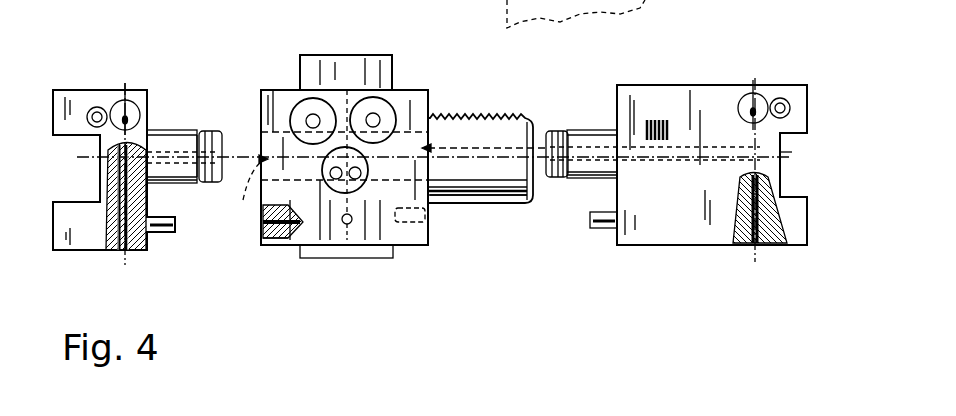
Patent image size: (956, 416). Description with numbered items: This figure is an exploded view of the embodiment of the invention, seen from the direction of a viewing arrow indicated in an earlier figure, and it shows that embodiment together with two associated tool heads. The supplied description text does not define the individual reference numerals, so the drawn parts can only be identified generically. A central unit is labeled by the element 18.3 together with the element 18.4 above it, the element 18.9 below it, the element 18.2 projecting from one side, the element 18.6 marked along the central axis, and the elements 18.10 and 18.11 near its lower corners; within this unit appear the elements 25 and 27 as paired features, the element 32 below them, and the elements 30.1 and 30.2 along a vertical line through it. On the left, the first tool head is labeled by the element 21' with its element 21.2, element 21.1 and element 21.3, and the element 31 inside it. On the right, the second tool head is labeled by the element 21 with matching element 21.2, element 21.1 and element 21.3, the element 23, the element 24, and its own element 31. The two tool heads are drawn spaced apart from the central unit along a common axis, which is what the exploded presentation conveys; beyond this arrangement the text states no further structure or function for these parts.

The second clamping block 21' is at (112, 142).
The clamping block 21 is at (712, 135).
The clamping bolt head 21.1 is at (200, 132).
The clamping bolt shank 21.2 is at (172, 128).
The guide pin 21.3 is at (171, 233).
The knurled marking 23 is at (655, 119).
The clamping recess 24 is at (792, 152).
The locating bores 25 is at (292, 110).
The locating pins 27 is at (368, 116).
The wedge pin 31 is at (126, 251).
The central bore 32 is at (362, 196).
The upper channel 30.1 is at (346, 88).
The lower channel 30.2 is at (347, 225).
The threaded sleeve 18.2 is at (528, 200).
The housing body 18.3 is at (396, 62).
The upper attachment block 18.4 is at (372, 55).
The bore axis 18.6 is at (376, 179).
The base flange 18.9 is at (318, 250).
The latch wedge 18.10 is at (262, 204).
The latch recess 18.11 is at (275, 239).